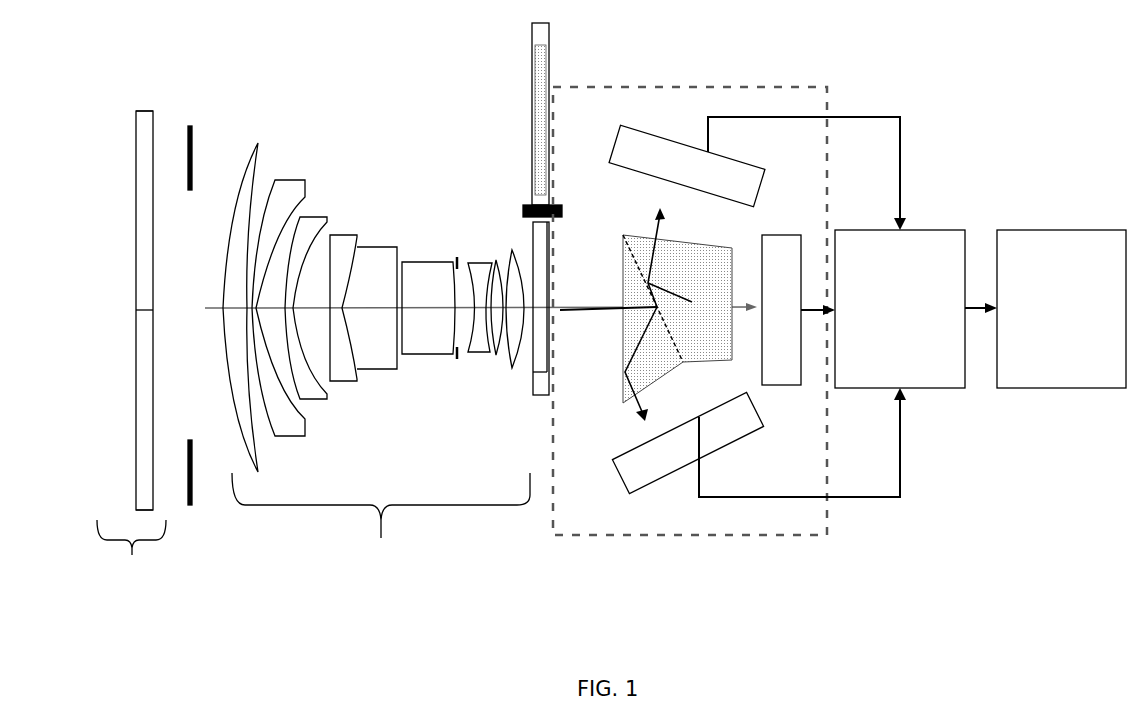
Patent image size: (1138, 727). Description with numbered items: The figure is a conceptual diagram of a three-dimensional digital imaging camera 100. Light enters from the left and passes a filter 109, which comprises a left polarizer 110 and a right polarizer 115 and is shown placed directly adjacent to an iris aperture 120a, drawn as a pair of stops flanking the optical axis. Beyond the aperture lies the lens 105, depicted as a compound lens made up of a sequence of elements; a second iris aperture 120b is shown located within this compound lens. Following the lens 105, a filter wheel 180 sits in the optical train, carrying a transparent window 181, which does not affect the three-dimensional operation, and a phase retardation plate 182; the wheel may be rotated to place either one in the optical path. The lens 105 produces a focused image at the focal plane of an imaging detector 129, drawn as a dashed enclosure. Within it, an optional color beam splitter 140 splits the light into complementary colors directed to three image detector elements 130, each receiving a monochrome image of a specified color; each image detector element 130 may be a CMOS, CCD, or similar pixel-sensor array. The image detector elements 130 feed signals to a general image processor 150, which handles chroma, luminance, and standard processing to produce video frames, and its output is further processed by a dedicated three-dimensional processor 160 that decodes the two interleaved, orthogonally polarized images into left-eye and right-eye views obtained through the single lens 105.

The camera 100 is at (470, 79).
The lens 105 is at (376, 352).
The filter 109 is at (126, 350).
The left polarizer 110 is at (136, 458).
The right polarizer 115 is at (136, 175).
The iris aperture 120a is at (192, 155).
The iris aperture 120b is at (457, 256).
The imaging detector 129 is at (832, 533).
The image detector element 130 is at (783, 234).
The color beam splitter 140 is at (625, 395).
The general image processor 150 is at (876, 379).
The 3-D processor 160 is at (1064, 380).
The filter wheel 180 is at (549, 35).
The transparent window 181 is at (535, 348).
The phase retardation plate 182 is at (538, 100).